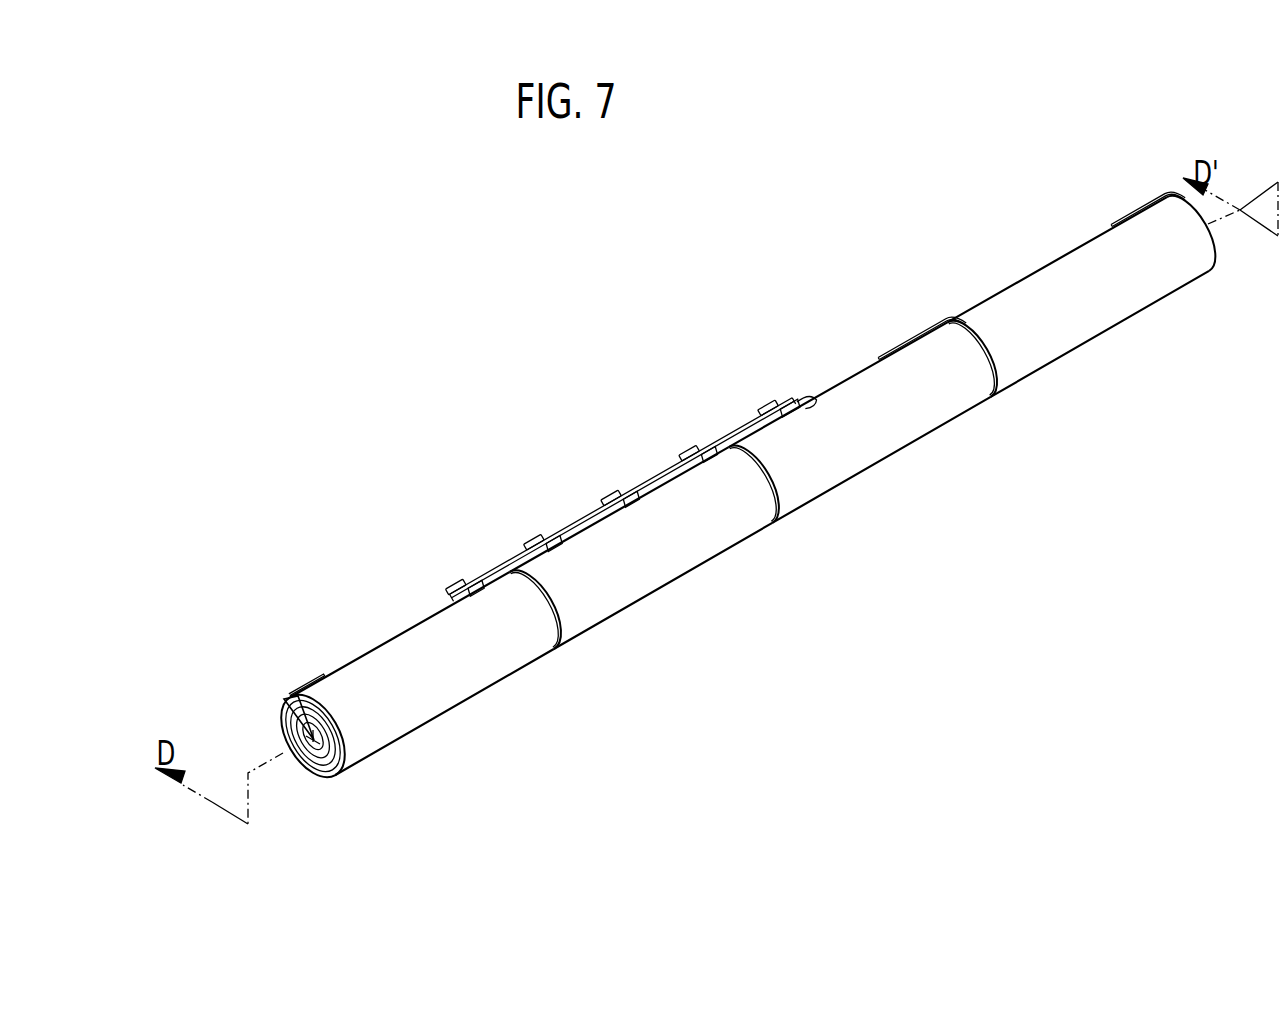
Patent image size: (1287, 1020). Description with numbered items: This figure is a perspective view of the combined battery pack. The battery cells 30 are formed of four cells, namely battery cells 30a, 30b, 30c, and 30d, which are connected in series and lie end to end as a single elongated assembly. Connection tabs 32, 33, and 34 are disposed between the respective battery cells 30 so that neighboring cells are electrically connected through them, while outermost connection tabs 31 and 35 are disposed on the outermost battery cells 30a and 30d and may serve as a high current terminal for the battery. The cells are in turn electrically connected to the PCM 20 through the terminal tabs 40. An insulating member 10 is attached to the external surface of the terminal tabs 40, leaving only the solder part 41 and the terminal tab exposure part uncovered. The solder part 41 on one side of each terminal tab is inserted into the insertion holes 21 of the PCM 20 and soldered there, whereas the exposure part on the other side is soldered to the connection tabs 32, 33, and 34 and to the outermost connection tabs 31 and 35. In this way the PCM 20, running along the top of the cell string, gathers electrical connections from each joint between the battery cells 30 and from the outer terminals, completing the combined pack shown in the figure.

The insulating member 10 is at (789, 404).
The PCM 20 is at (520, 567).
The insertion holes 21 is at (573, 540).
The battery cells 30 is at (759, 490).
The battery cell 30a is at (455, 686).
The battery cell 30b is at (652, 573).
The battery cell 30c is at (877, 445).
The battery cell 30d is at (1087, 313).
The outermost connection tab 31 is at (308, 690).
The connection tab 32 is at (500, 577).
The connection tab 33 is at (690, 455).
The connection tab 34 is at (922, 333).
The outermost connection tab 35 is at (1137, 205).
The terminal tabs 40 is at (796, 418).
The solder part 41 is at (772, 402).